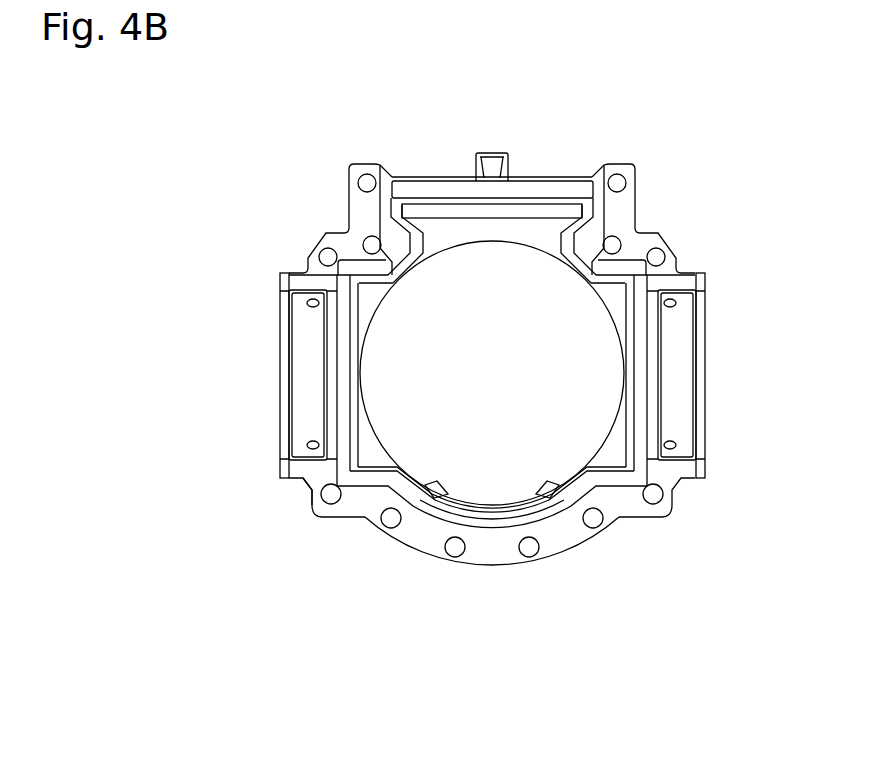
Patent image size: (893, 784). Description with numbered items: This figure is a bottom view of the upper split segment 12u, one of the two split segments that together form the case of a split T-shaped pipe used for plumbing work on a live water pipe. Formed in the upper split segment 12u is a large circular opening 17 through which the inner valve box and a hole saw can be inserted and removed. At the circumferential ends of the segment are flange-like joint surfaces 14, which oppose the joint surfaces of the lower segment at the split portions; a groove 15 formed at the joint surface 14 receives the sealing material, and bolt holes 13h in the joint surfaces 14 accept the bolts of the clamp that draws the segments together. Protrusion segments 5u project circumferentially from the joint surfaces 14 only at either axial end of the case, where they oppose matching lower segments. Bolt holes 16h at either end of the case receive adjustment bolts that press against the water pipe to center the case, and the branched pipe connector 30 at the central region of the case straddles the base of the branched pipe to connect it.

The branched pipe connector 30 is at (540, 176).
The joint surface 14 is at (362, 215).
The bolt hole 13h is at (648, 240).
The protrusion segment 5u is at (280, 280).
The bolt hole 16h is at (308, 438).
The upper split segment 12u is at (302, 508).
The groove 15 is at (556, 515).
The opening 17 is at (490, 452).